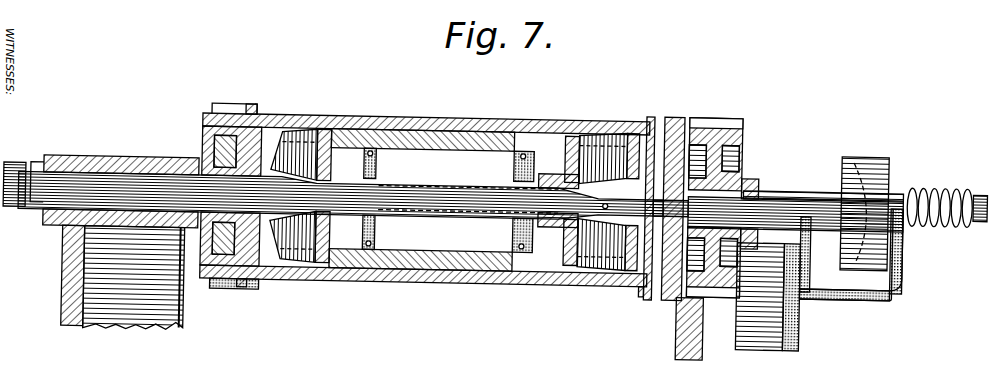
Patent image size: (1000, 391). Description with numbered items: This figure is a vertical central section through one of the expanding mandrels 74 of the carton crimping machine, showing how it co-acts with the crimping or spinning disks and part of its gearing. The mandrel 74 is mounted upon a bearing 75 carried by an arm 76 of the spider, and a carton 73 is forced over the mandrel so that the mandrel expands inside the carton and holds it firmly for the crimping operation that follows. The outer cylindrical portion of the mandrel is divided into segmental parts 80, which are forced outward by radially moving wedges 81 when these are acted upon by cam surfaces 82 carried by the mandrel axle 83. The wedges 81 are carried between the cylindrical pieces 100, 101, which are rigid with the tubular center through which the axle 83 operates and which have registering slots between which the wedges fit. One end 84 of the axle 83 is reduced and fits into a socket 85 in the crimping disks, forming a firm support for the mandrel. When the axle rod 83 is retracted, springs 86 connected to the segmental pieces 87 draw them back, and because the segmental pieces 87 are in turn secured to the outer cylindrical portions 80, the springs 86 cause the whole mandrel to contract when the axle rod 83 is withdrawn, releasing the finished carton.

The carton 73 is at (452, 114).
The mandrel 74 is at (362, 114).
The bearing 75 is at (177, 158).
The arm 76 is at (185, 296).
The segmental part 80 is at (485, 122).
The radially moving wedge 81 is at (290, 140).
The cam surface 82 is at (322, 262).
The mandrel axle 83 is at (436, 214).
The reduced end 84 is at (668, 200).
The socket 85 is at (742, 172).
The spring 86 is at (380, 160).
The segmental piece 87 is at (468, 258).
The cylindrical piece 100 is at (258, 288).
The cylindrical piece 101 is at (378, 246).